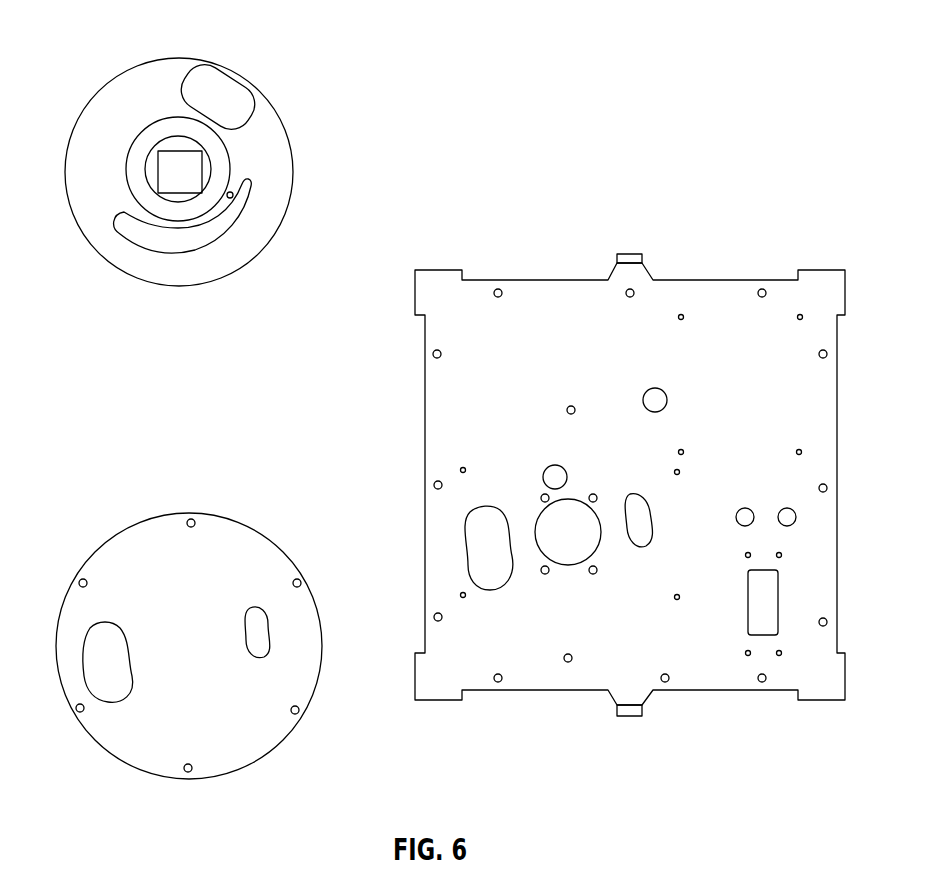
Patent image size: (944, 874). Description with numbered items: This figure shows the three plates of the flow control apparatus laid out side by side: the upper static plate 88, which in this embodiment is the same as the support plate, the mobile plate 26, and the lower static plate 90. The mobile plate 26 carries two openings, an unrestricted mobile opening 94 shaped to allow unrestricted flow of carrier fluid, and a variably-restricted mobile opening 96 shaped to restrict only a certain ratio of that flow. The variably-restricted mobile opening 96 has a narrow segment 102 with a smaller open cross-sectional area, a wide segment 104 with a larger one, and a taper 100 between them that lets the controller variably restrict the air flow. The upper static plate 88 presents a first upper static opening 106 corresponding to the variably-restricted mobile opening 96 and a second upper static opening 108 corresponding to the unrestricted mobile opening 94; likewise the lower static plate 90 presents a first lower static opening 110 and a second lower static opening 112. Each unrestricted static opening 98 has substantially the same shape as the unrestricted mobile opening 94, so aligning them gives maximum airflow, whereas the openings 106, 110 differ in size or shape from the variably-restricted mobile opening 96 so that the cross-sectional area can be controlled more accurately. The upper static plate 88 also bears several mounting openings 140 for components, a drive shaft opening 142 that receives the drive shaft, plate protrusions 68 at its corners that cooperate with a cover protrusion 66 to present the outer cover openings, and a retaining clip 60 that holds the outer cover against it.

The mobile plate 26 is at (148, 80).
The unrestricted mobile opening 94 is at (226, 70).
The drive shaft opening 142 is at (203, 170).
The variably-restricted mobile opening 96 is at (72, 205).
The taper 100 is at (230, 227).
The narrow segment 102 is at (249, 196).
The wide segment 104 is at (158, 253).
The upper static plate 88 is at (471, 702).
The plate protrusion 68 is at (442, 278).
The cover protrusion 66 is at (630, 254).
The retaining clip 60 is at (631, 718).
The mounting opening 140 is at (655, 388).
The second upper static opening 108 is at (483, 508).
The first upper static opening 106 is at (654, 518).
The unrestricted static opening 98 is at (490, 593).
The lower static plate 90 is at (295, 724).
The second lower static opening 112 is at (107, 622).
The first lower static opening 110 is at (272, 636).